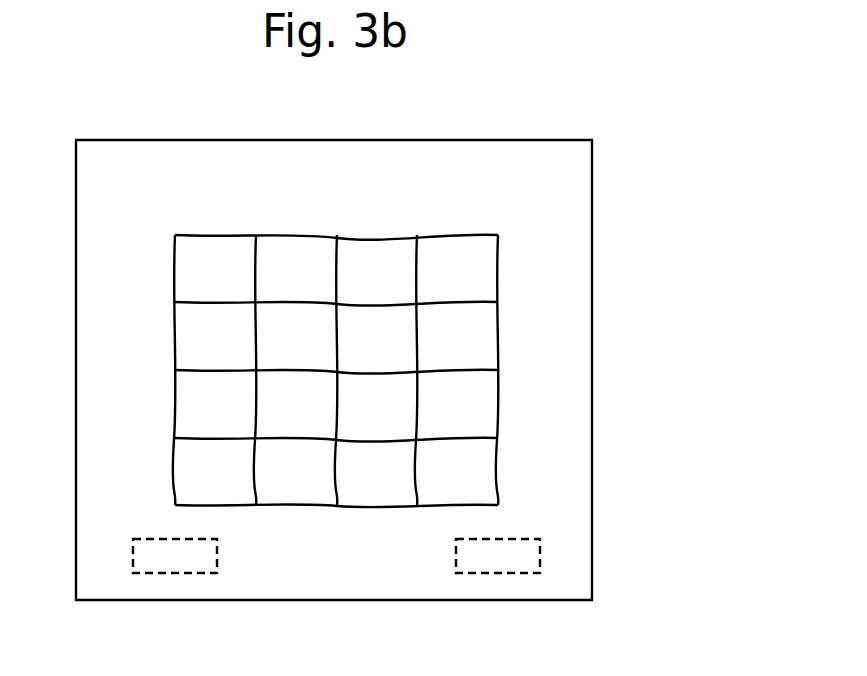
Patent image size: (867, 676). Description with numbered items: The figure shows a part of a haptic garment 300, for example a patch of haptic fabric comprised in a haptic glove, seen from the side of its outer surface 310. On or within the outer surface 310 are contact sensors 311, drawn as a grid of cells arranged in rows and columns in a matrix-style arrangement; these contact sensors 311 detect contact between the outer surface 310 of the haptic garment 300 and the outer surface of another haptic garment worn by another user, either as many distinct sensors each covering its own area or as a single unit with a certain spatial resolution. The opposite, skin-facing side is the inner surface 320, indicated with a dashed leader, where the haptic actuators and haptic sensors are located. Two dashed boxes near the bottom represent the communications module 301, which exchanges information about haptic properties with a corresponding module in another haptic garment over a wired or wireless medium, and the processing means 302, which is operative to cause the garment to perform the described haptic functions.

The haptic garment 300 is at (522, 130).
The outer surface 310 is at (556, 284).
The contact sensors 311 is at (218, 253).
The inner surface 320 is at (567, 440).
The communications module 301 is at (173, 562).
The processing means 302 is at (497, 565).